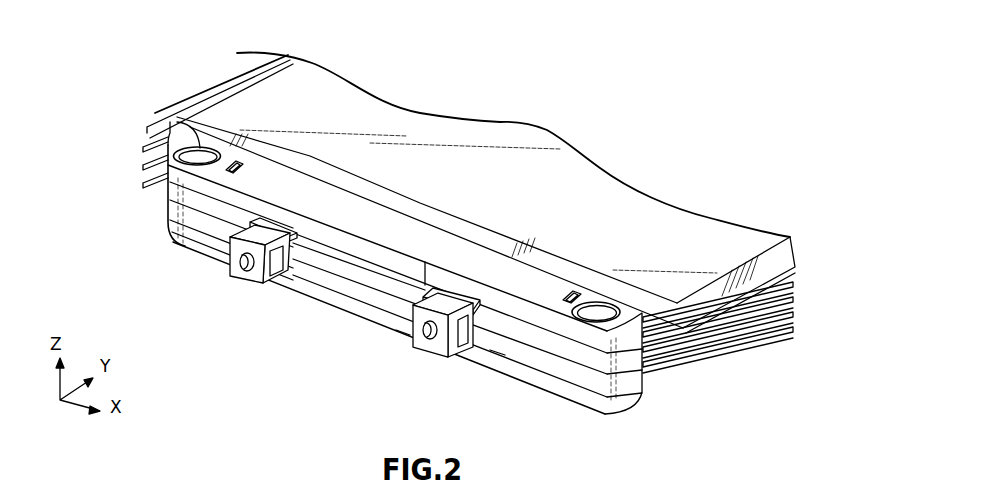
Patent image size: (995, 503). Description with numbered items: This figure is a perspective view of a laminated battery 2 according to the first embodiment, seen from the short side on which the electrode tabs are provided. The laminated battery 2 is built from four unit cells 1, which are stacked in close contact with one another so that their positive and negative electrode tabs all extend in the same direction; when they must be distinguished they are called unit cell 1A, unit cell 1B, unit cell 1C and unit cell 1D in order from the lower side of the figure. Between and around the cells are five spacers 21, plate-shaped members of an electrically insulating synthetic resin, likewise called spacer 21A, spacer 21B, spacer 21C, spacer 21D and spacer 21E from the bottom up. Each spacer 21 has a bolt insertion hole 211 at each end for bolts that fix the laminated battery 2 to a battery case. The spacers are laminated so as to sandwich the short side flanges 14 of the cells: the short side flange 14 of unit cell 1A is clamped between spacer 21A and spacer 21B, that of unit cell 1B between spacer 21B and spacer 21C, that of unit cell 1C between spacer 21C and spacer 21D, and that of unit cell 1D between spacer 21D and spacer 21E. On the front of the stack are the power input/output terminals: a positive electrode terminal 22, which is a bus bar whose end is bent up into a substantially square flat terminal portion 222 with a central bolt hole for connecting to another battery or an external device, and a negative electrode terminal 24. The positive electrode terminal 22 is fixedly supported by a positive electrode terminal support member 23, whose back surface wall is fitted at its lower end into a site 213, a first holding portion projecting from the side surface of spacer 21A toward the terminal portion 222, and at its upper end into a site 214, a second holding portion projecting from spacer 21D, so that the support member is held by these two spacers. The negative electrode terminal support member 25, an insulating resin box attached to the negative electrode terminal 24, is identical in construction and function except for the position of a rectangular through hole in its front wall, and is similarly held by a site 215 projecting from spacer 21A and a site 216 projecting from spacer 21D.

The laminated battery 2 is at (190, 79).
The unit cell 1 is at (428, 192).
The unit cell 1A is at (140, 185).
The unit cell 1B is at (143, 165).
The unit cell 1C is at (147, 148).
The unit cell 1D is at (150, 130).
The short side flange 14 is at (652, 330).
The spacer 21 is at (360, 273).
The spacer 21A is at (400, 323).
The spacer 21B is at (380, 303).
The spacer 21C is at (350, 273).
The spacer 21D is at (330, 247).
The spacer 21E is at (177, 243).
The bolt insertion hole 211 is at (198, 148).
The first holding portion 213 is at (307, 262).
The second holding portion 214 is at (277, 233).
The first holding portion 215 is at (497, 350).
The second holding portion 216 is at (455, 297).
The positive electrode terminal 22 is at (188, 275).
The terminal portion 222 is at (230, 248).
The positive electrode terminal support member 23 is at (272, 288).
The negative electrode terminal 24 is at (402, 332).
The negative electrode terminal support member 25 is at (453, 355).